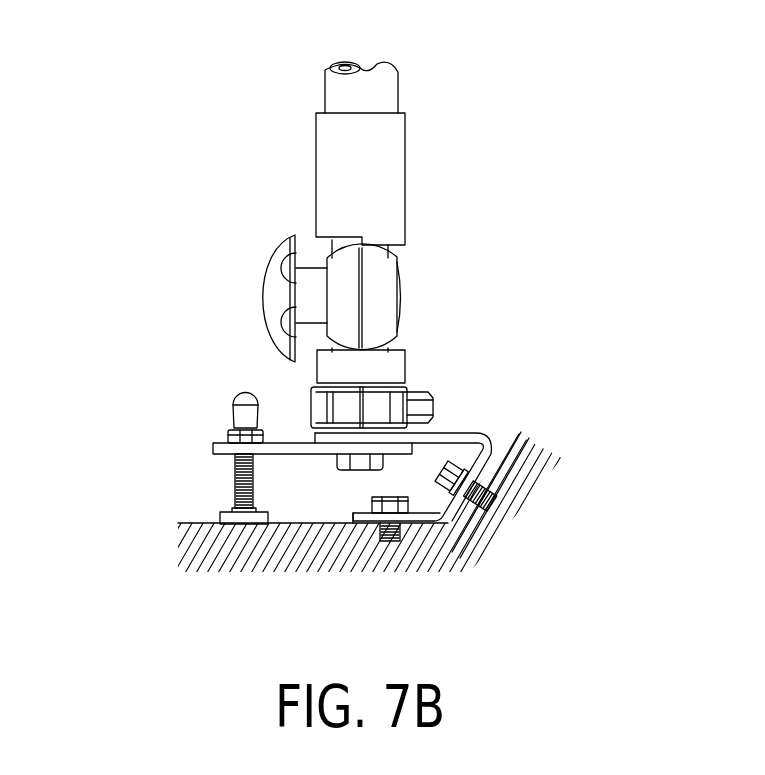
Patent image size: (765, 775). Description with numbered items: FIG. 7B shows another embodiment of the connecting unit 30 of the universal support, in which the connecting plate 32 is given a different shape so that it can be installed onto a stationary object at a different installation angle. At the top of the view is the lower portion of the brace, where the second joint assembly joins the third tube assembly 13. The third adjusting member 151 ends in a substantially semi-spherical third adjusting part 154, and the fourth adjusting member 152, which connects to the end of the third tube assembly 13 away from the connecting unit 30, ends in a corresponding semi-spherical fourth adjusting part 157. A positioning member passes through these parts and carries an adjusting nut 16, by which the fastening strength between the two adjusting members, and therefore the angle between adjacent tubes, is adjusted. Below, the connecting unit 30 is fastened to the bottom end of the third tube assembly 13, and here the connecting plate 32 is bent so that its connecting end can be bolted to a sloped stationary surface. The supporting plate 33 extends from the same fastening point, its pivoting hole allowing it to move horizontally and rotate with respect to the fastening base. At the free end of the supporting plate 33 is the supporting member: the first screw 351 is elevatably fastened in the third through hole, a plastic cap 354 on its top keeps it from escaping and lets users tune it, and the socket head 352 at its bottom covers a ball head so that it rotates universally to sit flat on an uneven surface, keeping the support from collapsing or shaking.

The connecting unit 30 is at (172, 408).
The third adjusting member 151 is at (388, 172).
The third adjusting part 154 is at (378, 280).
The fourth adjusting part 157 is at (337, 268).
The adjusting nut 16 is at (263, 255).
The fourth adjusting member 152 is at (392, 362).
The third tube assembly 13 is at (293, 404).
The supporting plate 33 is at (293, 448).
The connecting plate 32 is at (467, 437).
The plastic cap 354 is at (235, 403).
The first screw 351 is at (237, 478).
The socket head 352 is at (243, 515).